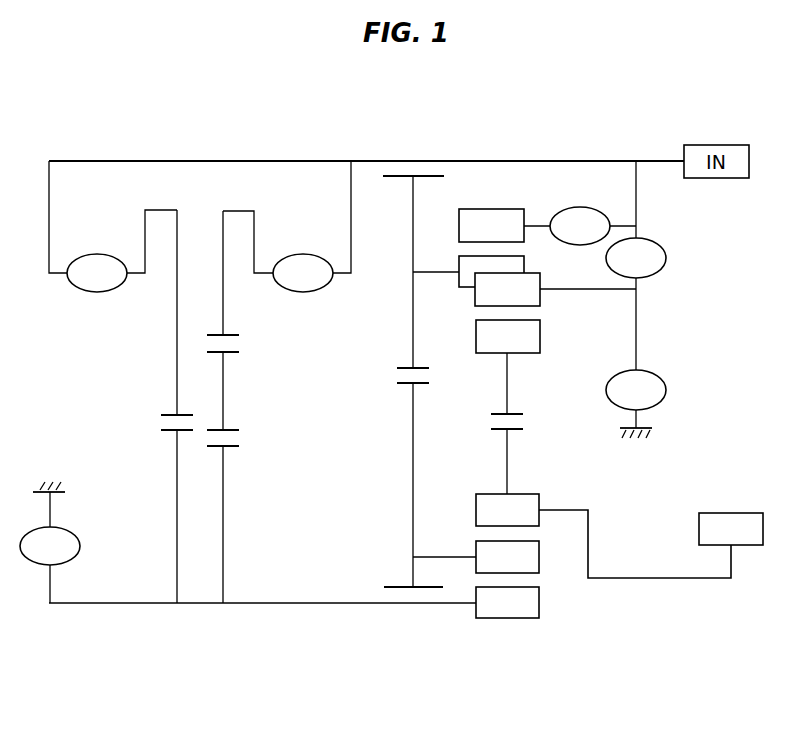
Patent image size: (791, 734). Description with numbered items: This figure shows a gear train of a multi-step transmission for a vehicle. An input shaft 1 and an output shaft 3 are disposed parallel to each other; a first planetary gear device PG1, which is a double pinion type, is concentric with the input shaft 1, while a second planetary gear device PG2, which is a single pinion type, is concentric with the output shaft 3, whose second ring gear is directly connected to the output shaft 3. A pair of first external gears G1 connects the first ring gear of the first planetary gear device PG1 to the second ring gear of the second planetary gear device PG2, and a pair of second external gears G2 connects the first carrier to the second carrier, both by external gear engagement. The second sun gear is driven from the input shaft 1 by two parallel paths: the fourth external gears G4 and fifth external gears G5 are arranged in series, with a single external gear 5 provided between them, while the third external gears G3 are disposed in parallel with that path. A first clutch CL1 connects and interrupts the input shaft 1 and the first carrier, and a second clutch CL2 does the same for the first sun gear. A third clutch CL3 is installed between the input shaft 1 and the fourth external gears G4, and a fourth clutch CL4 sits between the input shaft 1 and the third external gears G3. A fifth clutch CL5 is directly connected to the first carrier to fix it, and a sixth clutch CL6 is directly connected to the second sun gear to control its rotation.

The input shaft 1 is at (560, 160).
The output shaft 3 is at (659, 578).
The single external gear 5 is at (227, 390).
The first planetary gear device PG1 is at (480, 190).
The second planetary gear device PG2 is at (462, 626).
The first external gears G1 is at (534, 436).
The second external gears G2 is at (394, 392).
The third external gears G3 is at (150, 419).
The fourth external gears G4 is at (200, 342).
The fifth external gears G5 is at (200, 450).
The first clutch CL1 is at (603, 304).
The second clutch CL2 is at (580, 226).
The third clutch CL3 is at (278, 251).
The fourth clutch CL4 is at (122, 251).
The fifth clutch CL5 is at (636, 404).
The sixth clutch CL6 is at (50, 542).